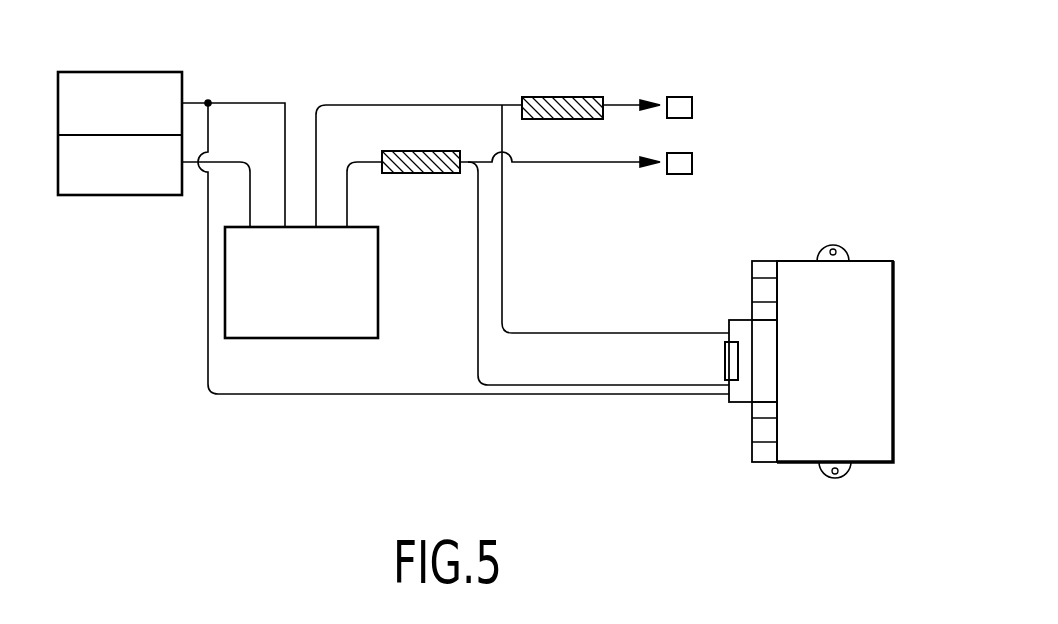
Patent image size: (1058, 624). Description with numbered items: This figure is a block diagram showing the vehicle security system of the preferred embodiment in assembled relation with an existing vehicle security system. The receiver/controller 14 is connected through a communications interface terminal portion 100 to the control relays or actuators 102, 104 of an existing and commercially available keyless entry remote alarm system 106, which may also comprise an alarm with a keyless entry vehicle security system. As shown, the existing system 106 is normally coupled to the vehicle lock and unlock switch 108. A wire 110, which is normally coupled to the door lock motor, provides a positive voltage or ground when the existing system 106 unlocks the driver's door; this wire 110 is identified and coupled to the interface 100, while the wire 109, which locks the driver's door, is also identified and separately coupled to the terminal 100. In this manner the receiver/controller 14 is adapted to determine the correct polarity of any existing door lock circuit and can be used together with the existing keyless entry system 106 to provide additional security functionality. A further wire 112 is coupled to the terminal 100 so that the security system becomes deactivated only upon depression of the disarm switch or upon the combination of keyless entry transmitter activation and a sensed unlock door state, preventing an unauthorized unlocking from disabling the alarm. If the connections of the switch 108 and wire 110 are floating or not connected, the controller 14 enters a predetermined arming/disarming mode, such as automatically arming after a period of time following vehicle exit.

The receiver/controller 14 is at (795, 450).
The communications interface terminal portion 100 is at (744, 333).
The control relay or actuator 102 is at (680, 174).
The control relay or actuator 104 is at (678, 97).
The existing keyless entry remote alarm system 106 is at (378, 288).
The vehicle lock and unlock switch 108 is at (130, 72).
The wire 109 is at (478, 212).
The wire 110 is at (502, 247).
The wire 112 is at (358, 394).